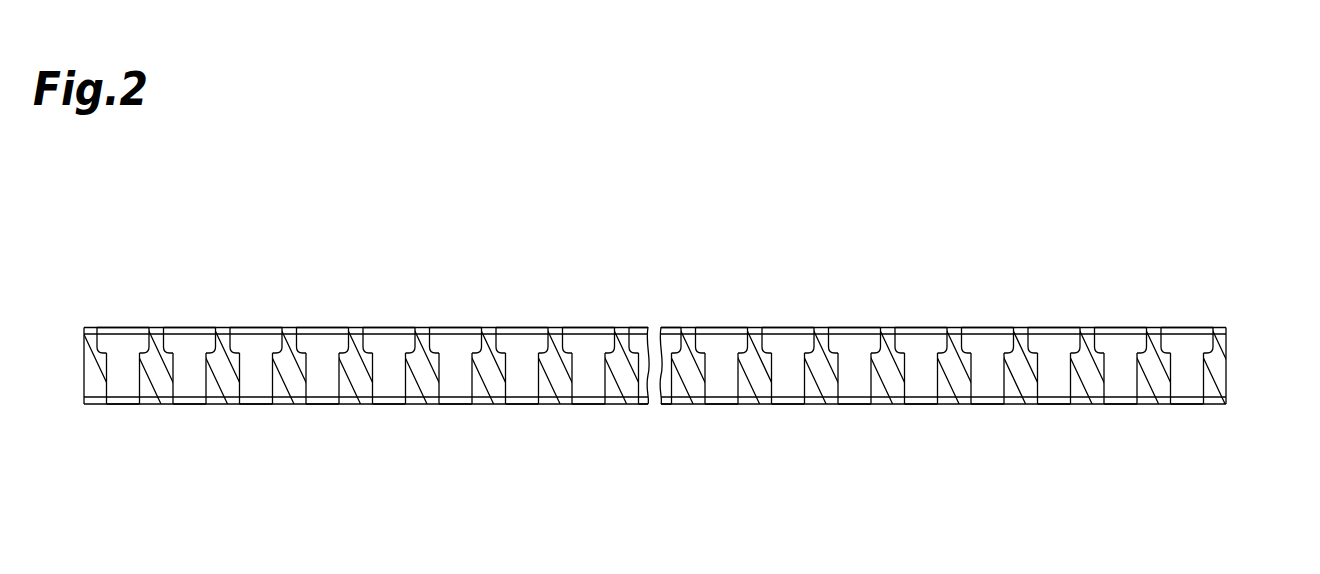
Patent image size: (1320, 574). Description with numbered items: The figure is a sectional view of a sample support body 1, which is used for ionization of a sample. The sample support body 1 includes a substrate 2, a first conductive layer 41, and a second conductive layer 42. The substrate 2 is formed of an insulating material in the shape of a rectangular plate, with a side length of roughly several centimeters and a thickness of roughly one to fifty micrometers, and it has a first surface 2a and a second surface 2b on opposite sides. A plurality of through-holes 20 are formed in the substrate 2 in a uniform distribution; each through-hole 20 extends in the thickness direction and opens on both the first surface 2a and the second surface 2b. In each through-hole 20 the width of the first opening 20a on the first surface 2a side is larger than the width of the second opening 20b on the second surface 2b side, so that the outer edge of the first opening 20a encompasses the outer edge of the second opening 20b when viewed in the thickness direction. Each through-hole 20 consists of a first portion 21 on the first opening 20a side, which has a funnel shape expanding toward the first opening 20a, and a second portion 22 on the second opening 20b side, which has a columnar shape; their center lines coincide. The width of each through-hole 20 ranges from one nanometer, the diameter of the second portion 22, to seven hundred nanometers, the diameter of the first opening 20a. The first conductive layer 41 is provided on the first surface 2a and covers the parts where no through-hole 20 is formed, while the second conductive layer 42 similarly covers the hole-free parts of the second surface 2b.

The sample support body 1 is at (1005, 287).
The substrate 2 is at (1228, 365).
The first surface 2a is at (1216, 329).
The second surface 2b is at (1210, 405).
The through-hole 20 is at (178, 374).
The first portion 21 is at (438, 330).
The second portion 22 is at (440, 372).
The first opening 20a is at (478, 327).
The second opening 20b is at (465, 404).
The first conductive layer 41 is at (614, 330).
The second conductive layer 42 is at (1020, 404).